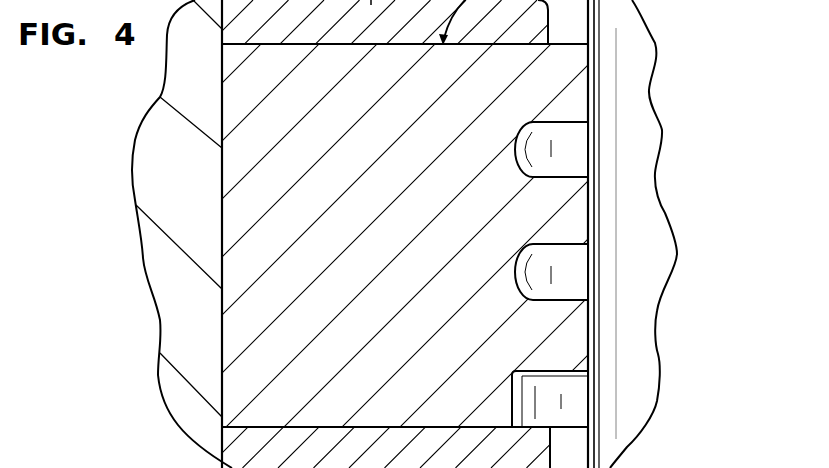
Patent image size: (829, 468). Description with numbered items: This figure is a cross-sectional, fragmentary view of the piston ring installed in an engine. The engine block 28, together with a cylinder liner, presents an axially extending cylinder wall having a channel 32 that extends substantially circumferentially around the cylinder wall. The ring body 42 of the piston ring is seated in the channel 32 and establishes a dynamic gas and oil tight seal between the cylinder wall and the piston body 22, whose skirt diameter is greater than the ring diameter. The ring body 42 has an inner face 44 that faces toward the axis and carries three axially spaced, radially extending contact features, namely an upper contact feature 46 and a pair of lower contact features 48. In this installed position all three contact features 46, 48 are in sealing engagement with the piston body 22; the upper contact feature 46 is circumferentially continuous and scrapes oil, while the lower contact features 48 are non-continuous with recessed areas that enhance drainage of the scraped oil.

The piston body 22 is at (647, 137).
The engine block 28 is at (153, 258).
The channel 32 is at (222, 295).
The ring body 42 is at (252, 153).
The inner face 44 is at (590, 187).
The upper contact feature 46 is at (588, 61).
The lower contact features 48 is at (570, 209).